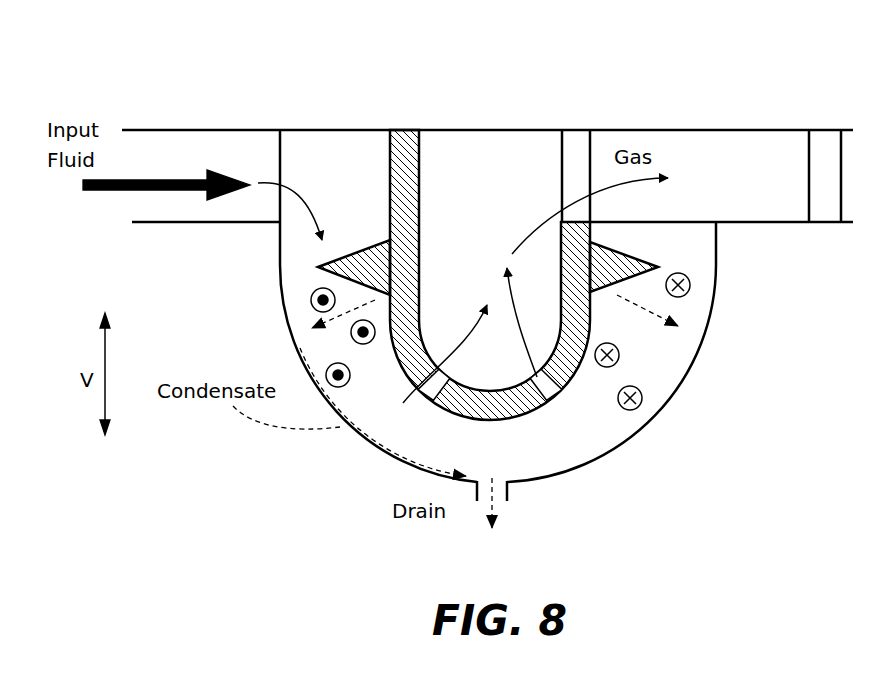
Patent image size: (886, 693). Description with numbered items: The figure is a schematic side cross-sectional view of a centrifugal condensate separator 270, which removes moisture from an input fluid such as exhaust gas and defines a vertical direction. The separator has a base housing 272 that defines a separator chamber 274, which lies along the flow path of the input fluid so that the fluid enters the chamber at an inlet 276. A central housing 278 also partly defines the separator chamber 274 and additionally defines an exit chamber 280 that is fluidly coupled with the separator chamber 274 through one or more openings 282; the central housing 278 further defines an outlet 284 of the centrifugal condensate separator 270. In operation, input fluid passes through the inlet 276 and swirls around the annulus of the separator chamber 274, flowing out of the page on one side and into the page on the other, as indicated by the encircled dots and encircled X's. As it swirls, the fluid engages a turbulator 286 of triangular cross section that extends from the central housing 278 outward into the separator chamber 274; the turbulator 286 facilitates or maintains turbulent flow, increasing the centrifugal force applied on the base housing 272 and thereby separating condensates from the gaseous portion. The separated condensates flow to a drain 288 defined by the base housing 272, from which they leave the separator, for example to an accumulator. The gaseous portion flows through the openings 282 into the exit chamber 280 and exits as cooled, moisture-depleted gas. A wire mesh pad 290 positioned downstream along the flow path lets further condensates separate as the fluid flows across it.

The centrifugal condensate separator 270 is at (692, 100).
The base housing 272 is at (607, 467).
The separator chamber 274 is at (541, 452).
The inlet 276 is at (272, 157).
The central housing 278 is at (421, 160).
The exit chamber 280 is at (518, 170).
The openings 282 is at (572, 395).
The outlet 284 is at (584, 182).
The turbulator 286 is at (358, 242).
The drain 288 is at (516, 495).
The wire mesh pad 290 is at (832, 142).